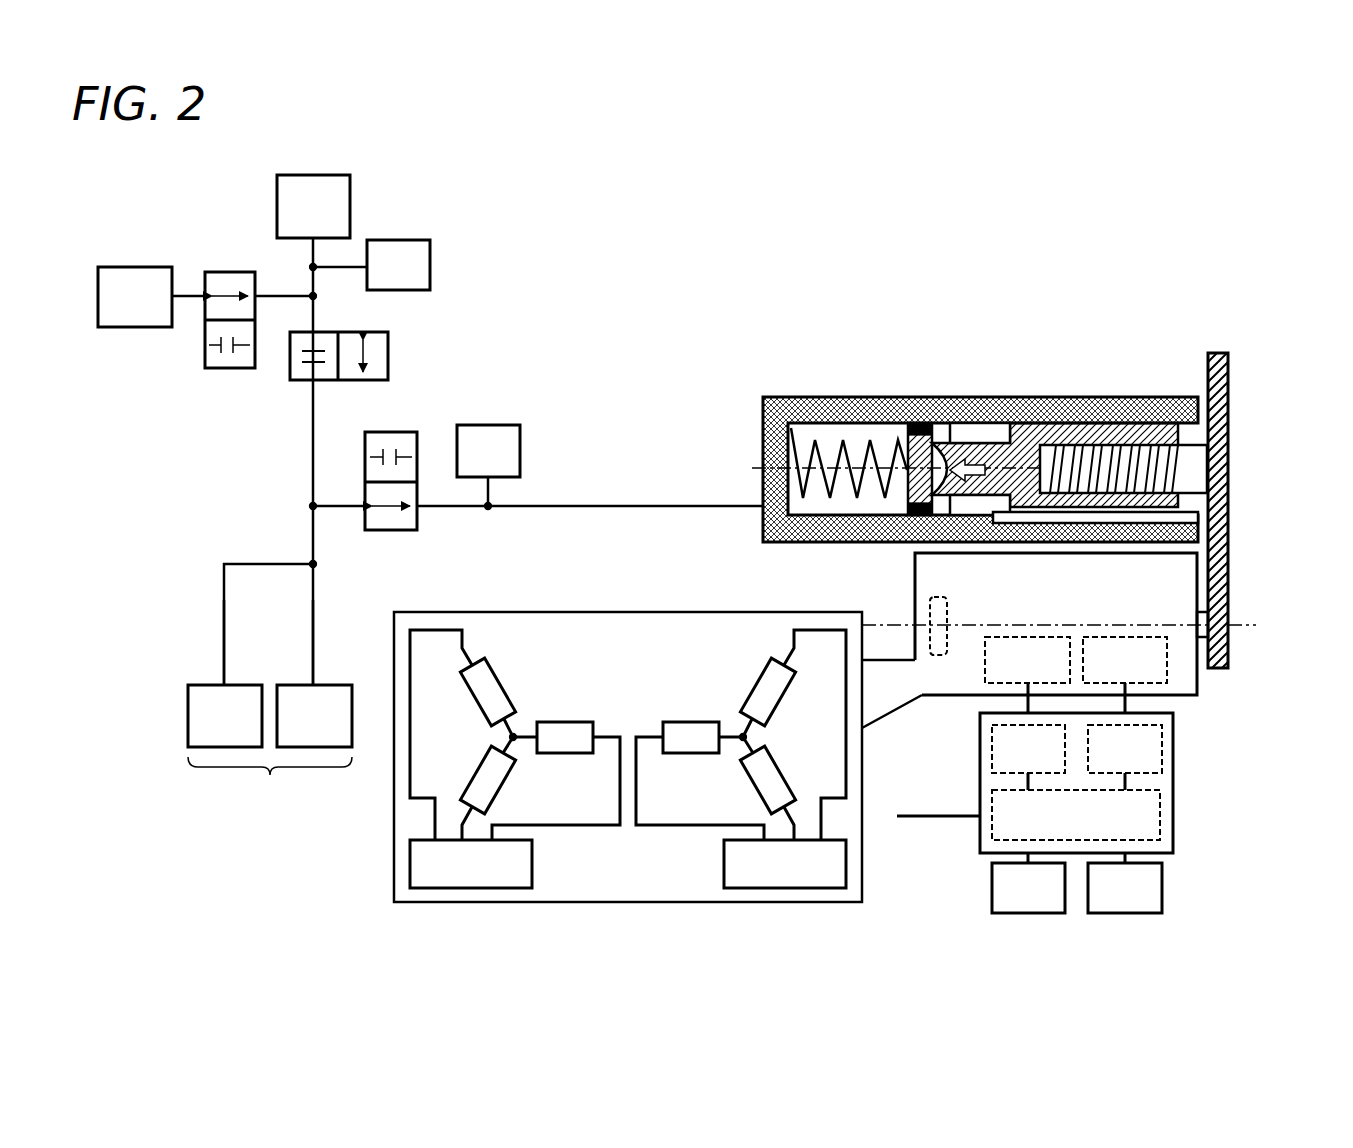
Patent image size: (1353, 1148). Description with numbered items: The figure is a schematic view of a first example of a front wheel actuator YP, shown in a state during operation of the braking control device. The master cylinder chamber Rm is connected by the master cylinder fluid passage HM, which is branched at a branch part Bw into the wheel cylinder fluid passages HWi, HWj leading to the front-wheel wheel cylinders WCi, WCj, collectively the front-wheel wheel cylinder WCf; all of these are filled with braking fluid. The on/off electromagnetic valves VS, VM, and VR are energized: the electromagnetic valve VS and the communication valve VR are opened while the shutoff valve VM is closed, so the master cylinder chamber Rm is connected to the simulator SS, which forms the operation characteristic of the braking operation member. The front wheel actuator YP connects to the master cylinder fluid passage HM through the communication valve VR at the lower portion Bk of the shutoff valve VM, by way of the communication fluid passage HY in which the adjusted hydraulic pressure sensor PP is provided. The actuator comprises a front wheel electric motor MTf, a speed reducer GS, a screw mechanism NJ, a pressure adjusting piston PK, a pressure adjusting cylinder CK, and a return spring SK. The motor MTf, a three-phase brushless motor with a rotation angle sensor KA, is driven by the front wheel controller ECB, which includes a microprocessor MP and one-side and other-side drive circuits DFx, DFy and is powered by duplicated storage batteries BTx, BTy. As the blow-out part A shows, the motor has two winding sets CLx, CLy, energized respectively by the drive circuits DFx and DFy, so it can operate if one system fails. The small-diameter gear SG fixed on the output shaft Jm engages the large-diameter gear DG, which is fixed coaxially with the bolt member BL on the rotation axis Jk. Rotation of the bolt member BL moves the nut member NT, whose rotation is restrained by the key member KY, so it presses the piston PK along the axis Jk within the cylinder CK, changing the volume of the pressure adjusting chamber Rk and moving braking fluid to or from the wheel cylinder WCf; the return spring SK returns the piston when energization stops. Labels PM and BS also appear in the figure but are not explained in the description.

The master cylinder chamber Rm is at (313, 206).
The master cylinder pressure sensor PM is at (371, 265).
The simulator SS is at (151, 297).
The electromagnetic valve VS is at (213, 272).
The shutoff valve VM is at (384, 318).
The master cylinder fluid passage HM is at (313, 418).
The communication valve VR is at (371, 432).
The adjusted hydraulic pressure sensor PP is at (488, 467).
The communication fluid passage HY is at (597, 506).
The lower portion of the shutoff valve Bk is at (313, 506).
The branch part Bw is at (313, 564).
The wheel cylinder fluid passage HWj is at (224, 617).
The wheel cylinder fluid passage HWi is at (313, 617).
The front-wheel wheel cylinder WCj is at (225, 716).
The front-wheel wheel cylinder WCi is at (314, 716).
The front-wheel wheel cylinder WCf is at (270, 786).
The blow-out part A is at (603, 612).
The one-side motor winding set CLx is at (540, 702).
The other-side motor winding set CLy is at (720, 706).
The one-side front wheel drive circuit DFx is at (471, 864).
The other-side front wheel drive circuit DFy is at (785, 864).
The front wheel actuator YP is at (993, 306).
The rotation axis Jk is at (749, 472).
The pressure adjusting cylinder CK is at (762, 530).
The pressure adjusting chamber Rk is at (793, 423).
The return spring SK is at (840, 423).
The pressure adjusting piston PK is at (912, 422).
The screw mechanism NJ is at (1069, 411).
The bolt member BL is at (1084, 425).
The nut member NT is at (1142, 422).
The key member KY is at (1224, 513).
The large-diameter gear DG is at (1230, 550).
The small-diameter gear SG is at (1260, 619).
The speed reducer GS is at (1283, 595).
The front wheel electric motor MTf is at (913, 556).
The rotation angle sensor KA is at (934, 597).
The output shaft Jm is at (1084, 620).
The front wheel controller ECB is at (1173, 745).
The braking operation signal BS is at (938, 803).
The microprocessor MP is at (1076, 815).
The one side storage battery BTx is at (1028, 883).
The other side storage battery BTy is at (1125, 883).